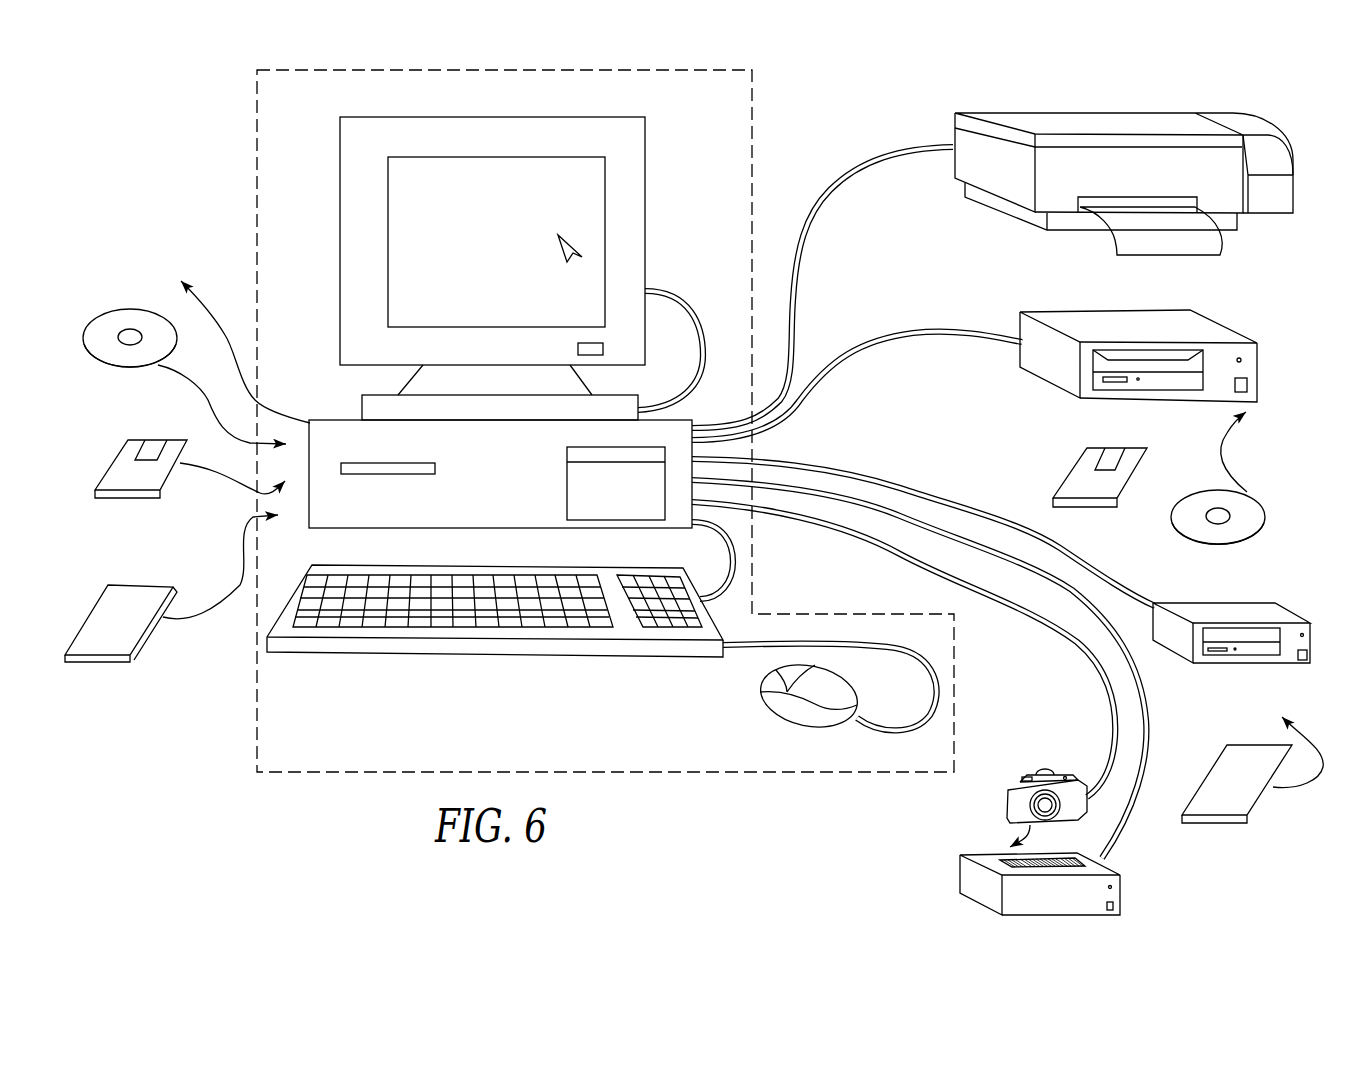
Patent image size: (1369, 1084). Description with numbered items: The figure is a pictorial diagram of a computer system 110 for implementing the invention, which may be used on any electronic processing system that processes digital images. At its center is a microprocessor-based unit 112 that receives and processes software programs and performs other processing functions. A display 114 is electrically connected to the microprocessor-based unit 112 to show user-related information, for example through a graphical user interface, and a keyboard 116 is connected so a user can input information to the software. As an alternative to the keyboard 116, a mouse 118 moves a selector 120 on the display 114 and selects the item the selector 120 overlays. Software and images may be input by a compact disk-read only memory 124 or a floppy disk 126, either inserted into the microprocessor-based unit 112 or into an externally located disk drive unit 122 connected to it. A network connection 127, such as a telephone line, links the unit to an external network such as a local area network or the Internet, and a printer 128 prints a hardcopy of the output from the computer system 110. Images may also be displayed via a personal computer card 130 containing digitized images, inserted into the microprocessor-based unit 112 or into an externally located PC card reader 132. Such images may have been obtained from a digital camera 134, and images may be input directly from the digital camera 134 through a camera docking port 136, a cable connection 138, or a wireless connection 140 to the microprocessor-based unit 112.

The computer system 110 is at (757, 97).
The microprocessor-based unit 112 is at (332, 419).
The display 114 is at (465, 117).
The keyboard 116 is at (427, 653).
The mouse 118 is at (773, 700).
The selector 120 is at (573, 250).
The disk drive unit 122 is at (1068, 315).
The compact disk-read only memory (CD-ROM) 124 is at (105, 313).
The floppy disk 126 is at (120, 452).
The network connection 127 is at (220, 342).
The printer 128 is at (1077, 115).
The personal computer card (PC card) 130 is at (102, 600).
The PC card reader 132 is at (1252, 665).
The digital camera 134 is at (1045, 773).
The camera docking port 136 is at (980, 893).
The cable connection 138 is at (1058, 650).
The wireless connection 140 is at (885, 775).